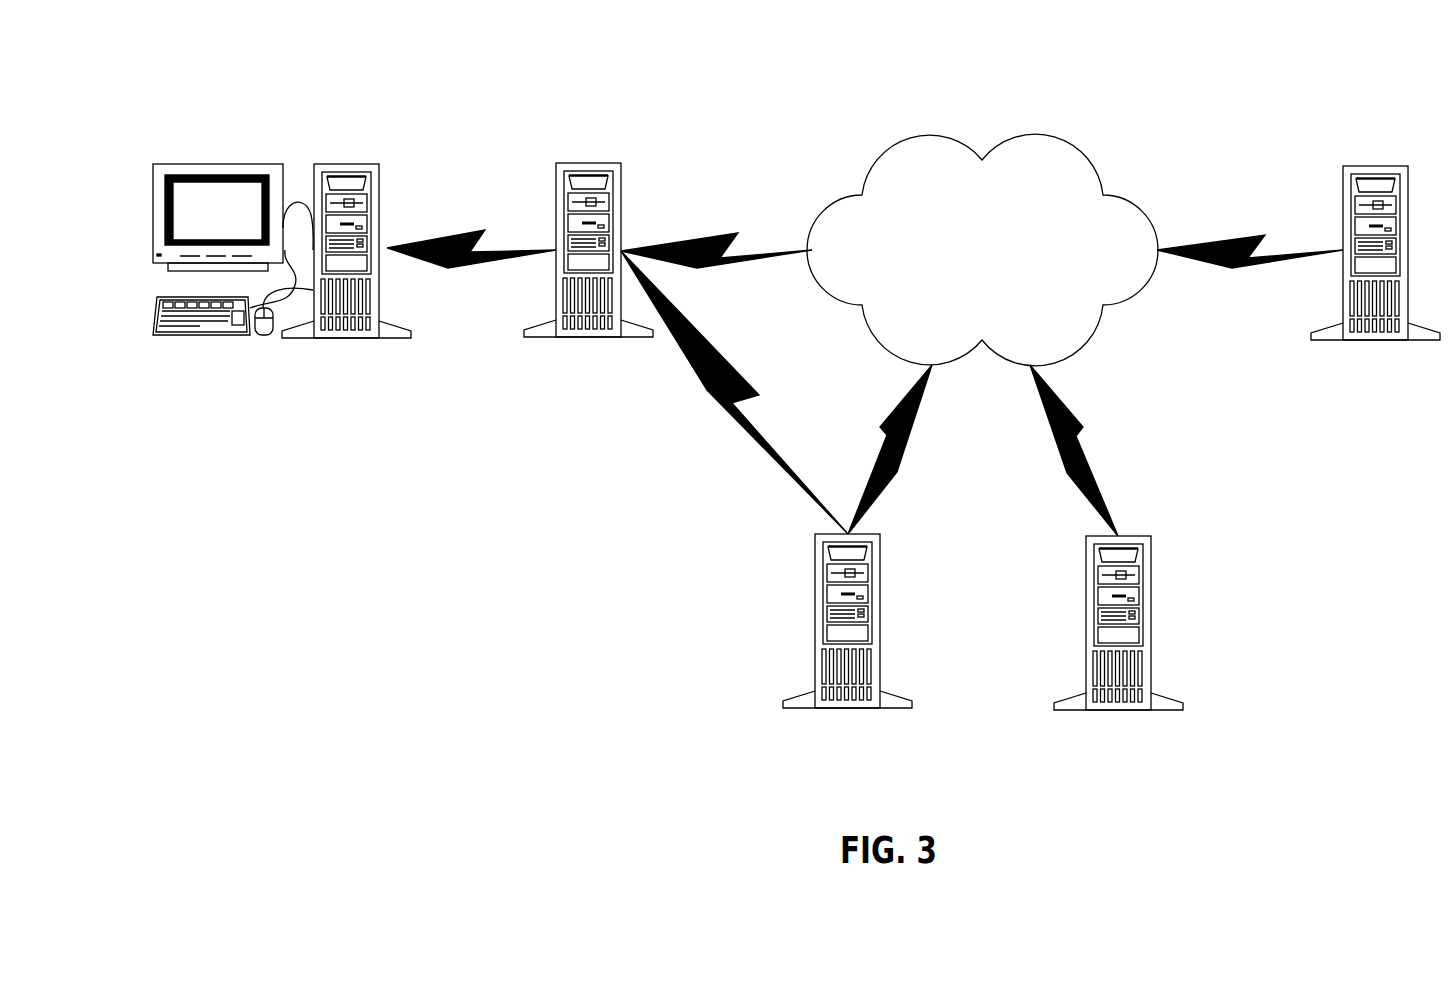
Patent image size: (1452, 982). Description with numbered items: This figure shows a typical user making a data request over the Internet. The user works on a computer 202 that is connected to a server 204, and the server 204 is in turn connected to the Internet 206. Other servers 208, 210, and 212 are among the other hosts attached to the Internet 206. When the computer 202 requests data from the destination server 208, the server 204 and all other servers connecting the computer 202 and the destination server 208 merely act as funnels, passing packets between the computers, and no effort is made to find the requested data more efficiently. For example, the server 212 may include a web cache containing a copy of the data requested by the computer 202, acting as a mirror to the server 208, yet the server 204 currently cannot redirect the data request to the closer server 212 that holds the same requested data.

The computer 202 is at (210, 106).
The server 204 is at (590, 162).
The Internet 206 is at (925, 137).
The destination server 208 is at (1375, 165).
The server 210 is at (1151, 620).
The server 212 is at (815, 620).